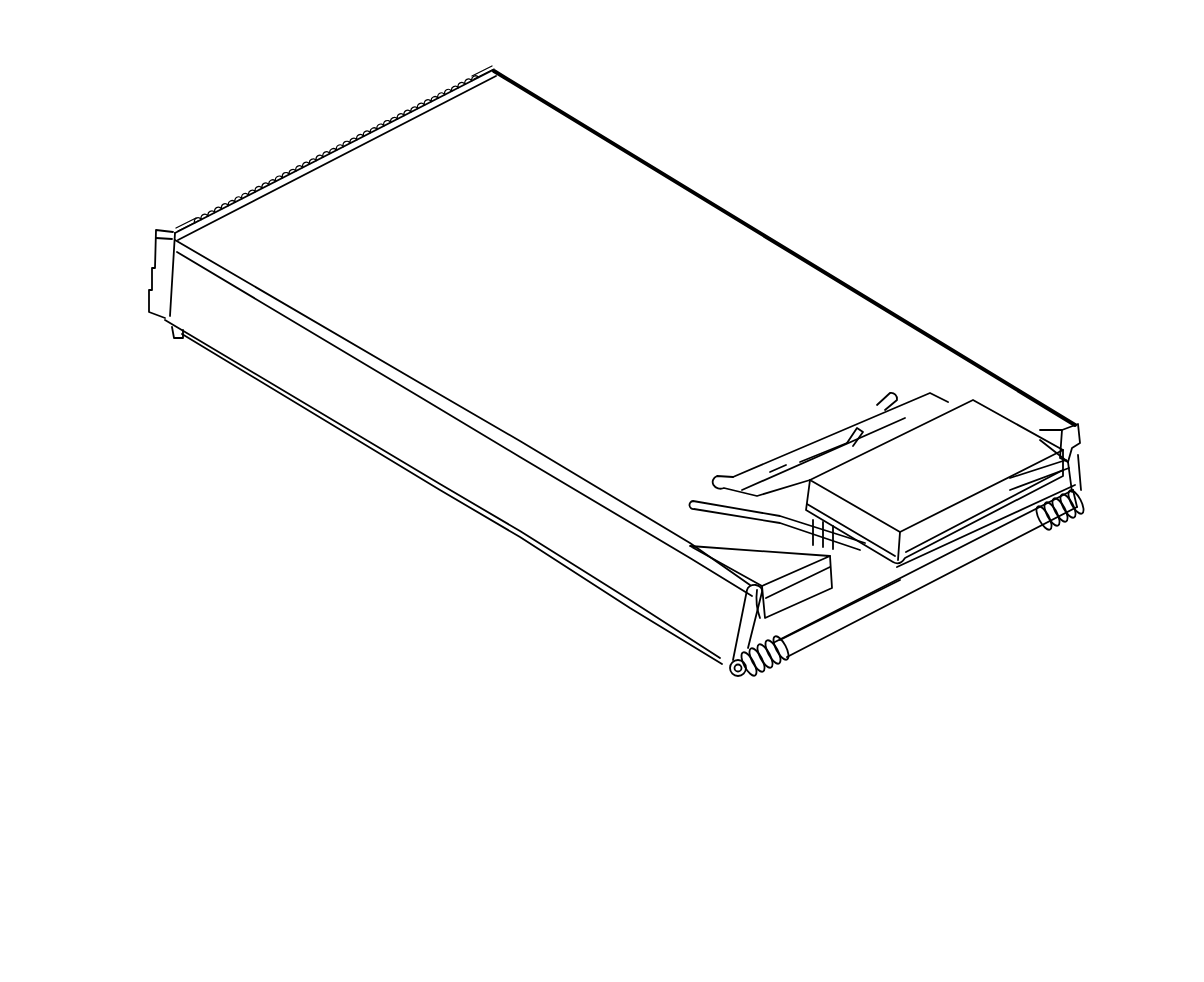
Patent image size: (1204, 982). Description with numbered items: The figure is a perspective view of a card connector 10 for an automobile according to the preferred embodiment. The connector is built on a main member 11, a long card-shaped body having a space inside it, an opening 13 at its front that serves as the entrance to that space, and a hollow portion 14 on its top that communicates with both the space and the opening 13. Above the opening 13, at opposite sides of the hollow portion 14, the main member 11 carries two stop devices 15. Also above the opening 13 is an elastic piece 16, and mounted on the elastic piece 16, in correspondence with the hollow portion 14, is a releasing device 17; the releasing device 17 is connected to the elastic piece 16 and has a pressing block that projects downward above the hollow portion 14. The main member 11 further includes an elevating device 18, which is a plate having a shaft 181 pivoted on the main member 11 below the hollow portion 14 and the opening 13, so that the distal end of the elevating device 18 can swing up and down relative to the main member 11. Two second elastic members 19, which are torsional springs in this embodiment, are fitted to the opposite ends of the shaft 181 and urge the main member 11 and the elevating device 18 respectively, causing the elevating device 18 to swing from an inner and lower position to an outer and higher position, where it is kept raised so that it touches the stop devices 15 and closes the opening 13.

The card connector 10 is at (304, 514).
The main member 11 is at (487, 534).
The opening 13 is at (745, 625).
The hollow portion 14 is at (740, 508).
The stop device 15 is at (812, 587).
The elastic piece 16 is at (943, 402).
The releasing device 17 is at (1018, 422).
The elevating device 18 is at (868, 578).
The second elastic member 19 is at (788, 658).
The shaft 181 is at (735, 682).